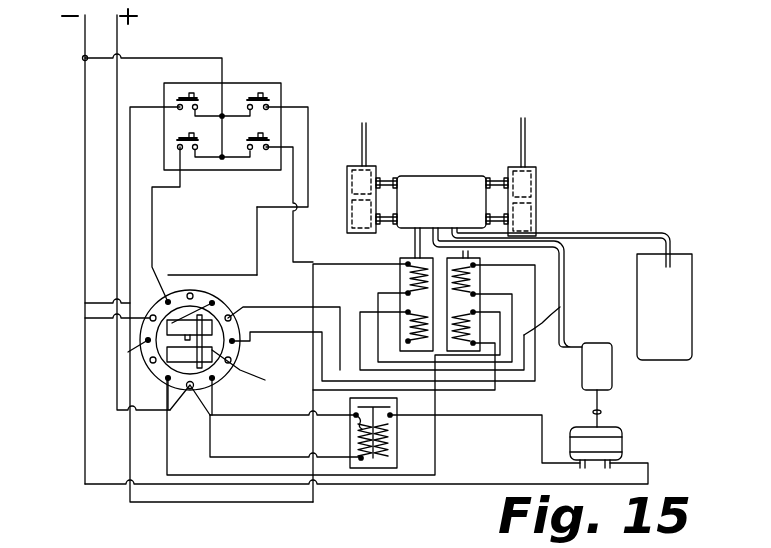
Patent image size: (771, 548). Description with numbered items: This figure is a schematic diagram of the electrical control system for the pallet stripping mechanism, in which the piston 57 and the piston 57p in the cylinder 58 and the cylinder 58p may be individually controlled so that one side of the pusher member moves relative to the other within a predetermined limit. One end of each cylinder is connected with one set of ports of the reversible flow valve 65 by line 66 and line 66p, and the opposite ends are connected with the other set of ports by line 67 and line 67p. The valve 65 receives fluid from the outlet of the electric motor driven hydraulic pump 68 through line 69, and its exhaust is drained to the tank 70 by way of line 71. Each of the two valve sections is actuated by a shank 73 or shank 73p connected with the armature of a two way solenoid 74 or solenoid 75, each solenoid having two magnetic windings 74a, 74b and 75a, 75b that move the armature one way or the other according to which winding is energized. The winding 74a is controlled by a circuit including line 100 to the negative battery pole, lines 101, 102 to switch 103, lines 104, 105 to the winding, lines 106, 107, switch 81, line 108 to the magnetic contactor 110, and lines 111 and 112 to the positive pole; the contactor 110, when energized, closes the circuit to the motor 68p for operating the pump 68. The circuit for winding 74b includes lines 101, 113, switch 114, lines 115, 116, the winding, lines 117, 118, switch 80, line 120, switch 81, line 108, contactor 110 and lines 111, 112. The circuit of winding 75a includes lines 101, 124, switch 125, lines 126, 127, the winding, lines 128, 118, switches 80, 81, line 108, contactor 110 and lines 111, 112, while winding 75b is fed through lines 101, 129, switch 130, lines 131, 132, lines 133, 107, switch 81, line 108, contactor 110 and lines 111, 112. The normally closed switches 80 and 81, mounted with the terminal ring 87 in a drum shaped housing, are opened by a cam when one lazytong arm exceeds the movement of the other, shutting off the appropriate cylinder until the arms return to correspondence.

The line 100 is at (85, 43).
The line 101 is at (199, 58).
The line 102 is at (203, 105).
The switch 103 is at (179, 86).
The line 104 is at (150, 160).
The line 105 is at (130, 460).
The line 106 is at (378, 308).
The line 107 is at (436, 440).
The line 108 is at (294, 454).
The magnetic contactor 110 is at (390, 434).
The line 111 is at (268, 414).
The line 112 is at (118, 410).
The line 113 is at (206, 145).
The switch 114 is at (180, 137).
The line 115 is at (152, 221).
The line 116 is at (213, 274).
The line 117 is at (360, 370).
The line 118 is at (332, 333).
The line 120 is at (247, 370).
The line 124 is at (245, 106).
The switch 125 is at (279, 84).
The line 126 is at (308, 142).
The line 127 is at (249, 308).
The line 128 is at (559, 306).
The line 129 is at (244, 146).
The switch 130 is at (264, 134).
The line 131 is at (293, 192).
The line 132 is at (253, 343).
The line 133 is at (514, 362).
The piston 57 is at (534, 142).
The piston 57p is at (366, 140).
The cylinder 58 is at (536, 193).
The cylinder 58p is at (345, 217).
The reversible flow valve 65 is at (438, 172).
The line 66 is at (497, 159).
The line 66p is at (384, 176).
The line 67 is at (494, 215).
The line 67p is at (394, 216).
The hydraulic pump 68 is at (598, 343).
The motor 68p is at (622, 432).
The line 69 is at (572, 285).
The tank 70 is at (670, 296).
The line 71 is at (616, 233).
The shank 73 is at (415, 238).
The shank 73p is at (538, 220).
The two way solenoid 74 is at (391, 277).
The magnetic winding 74a is at (406, 259).
The magnetic winding 74b is at (434, 358).
The two way solenoid 75 is at (486, 281).
The magnetic winding 75a is at (473, 294).
The magnetic winding 75b is at (474, 325).
The switch 80 is at (152, 316).
The switch 81 is at (160, 382).
The terminal ring 87 is at (206, 296).